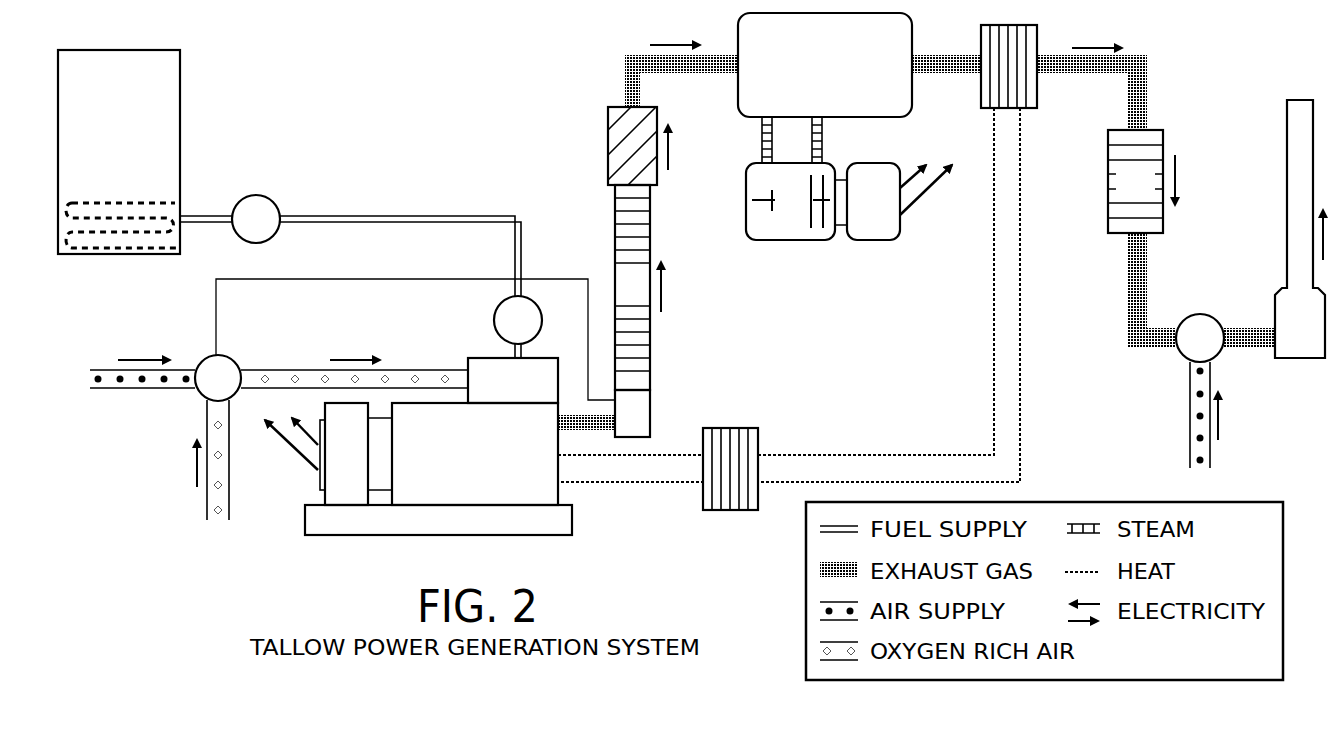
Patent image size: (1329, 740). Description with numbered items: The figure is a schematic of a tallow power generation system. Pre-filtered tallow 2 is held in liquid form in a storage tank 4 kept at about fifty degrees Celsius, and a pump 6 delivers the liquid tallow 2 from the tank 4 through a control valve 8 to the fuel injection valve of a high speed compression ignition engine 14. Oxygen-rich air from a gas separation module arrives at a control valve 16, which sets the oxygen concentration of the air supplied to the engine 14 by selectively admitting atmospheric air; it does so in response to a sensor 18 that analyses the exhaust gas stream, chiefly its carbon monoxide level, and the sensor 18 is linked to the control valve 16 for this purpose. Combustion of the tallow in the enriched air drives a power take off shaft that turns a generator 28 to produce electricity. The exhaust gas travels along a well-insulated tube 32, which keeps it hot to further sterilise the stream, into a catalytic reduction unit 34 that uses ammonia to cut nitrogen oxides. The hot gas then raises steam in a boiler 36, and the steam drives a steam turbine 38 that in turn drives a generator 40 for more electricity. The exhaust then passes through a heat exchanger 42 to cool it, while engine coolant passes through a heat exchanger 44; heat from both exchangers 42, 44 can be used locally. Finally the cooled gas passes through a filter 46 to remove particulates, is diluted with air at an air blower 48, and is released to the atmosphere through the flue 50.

The pre-filtered tallow 2 is at (405, 207).
The storage tank 4 is at (119, 152).
The pump 6 is at (230, 219).
The control valve 8 is at (518, 320).
The high speed compression ignition engine 14 is at (438, 446).
The control valve 16 is at (275, 425).
The sensor 18 is at (604, 413).
The generator 28 is at (328, 454).
The well-insulated tube 32 is at (638, 287).
The catalytic reduction unit 34 is at (638, 146).
The boiler 36 is at (803, 65).
The steam turbine 38 is at (790, 178).
The generator 40 is at (893, 201).
The heat exchanger 42 is at (1009, 66).
The heat exchanger 44 is at (730, 469).
The filter 46 is at (1106, 198).
The air blower 48 is at (1237, 391).
The flue 50 is at (1300, 229).